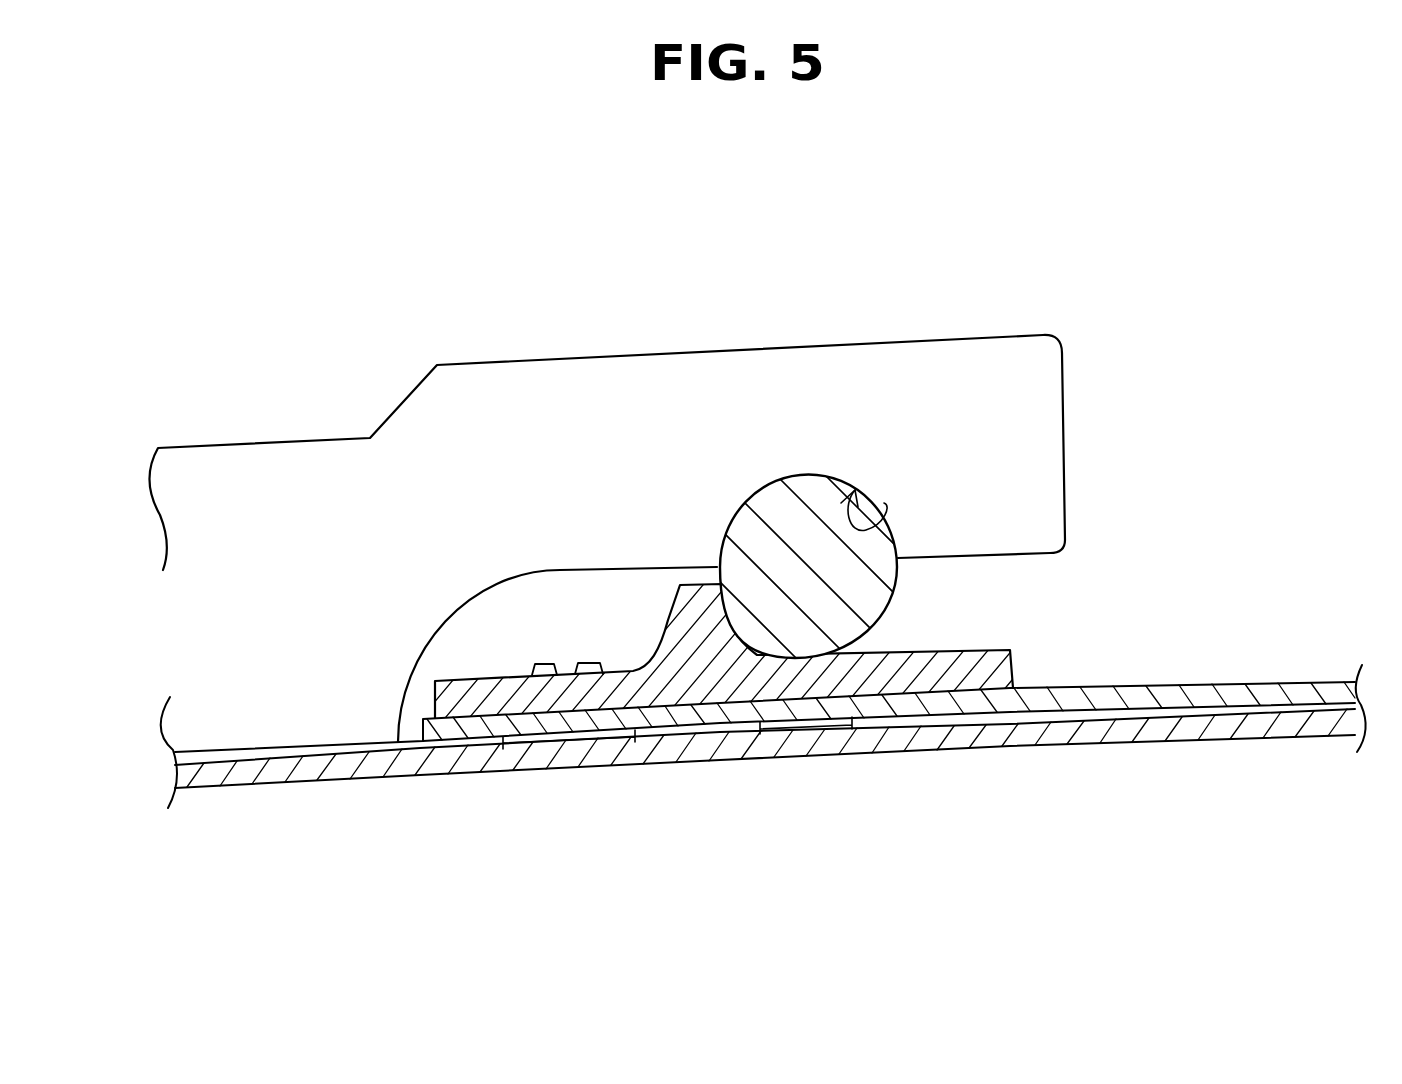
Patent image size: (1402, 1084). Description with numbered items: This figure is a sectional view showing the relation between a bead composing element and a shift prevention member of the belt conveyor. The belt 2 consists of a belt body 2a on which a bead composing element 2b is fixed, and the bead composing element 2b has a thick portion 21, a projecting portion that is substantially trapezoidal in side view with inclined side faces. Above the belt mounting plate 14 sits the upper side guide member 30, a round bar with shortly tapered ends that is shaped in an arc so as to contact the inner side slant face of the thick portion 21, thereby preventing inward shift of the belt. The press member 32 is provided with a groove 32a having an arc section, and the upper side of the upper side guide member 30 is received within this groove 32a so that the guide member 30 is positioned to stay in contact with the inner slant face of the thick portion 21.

The belt 2 is at (1292, 438).
The belt body 2a is at (1243, 683).
The bead composing element 2b is at (1000, 668).
The belt mounting plate 14 is at (1132, 710).
The thick portion 21 is at (698, 613).
The upper side guide member 30 is at (804, 530).
The press member 32 is at (650, 387).
The groove 32a is at (884, 505).